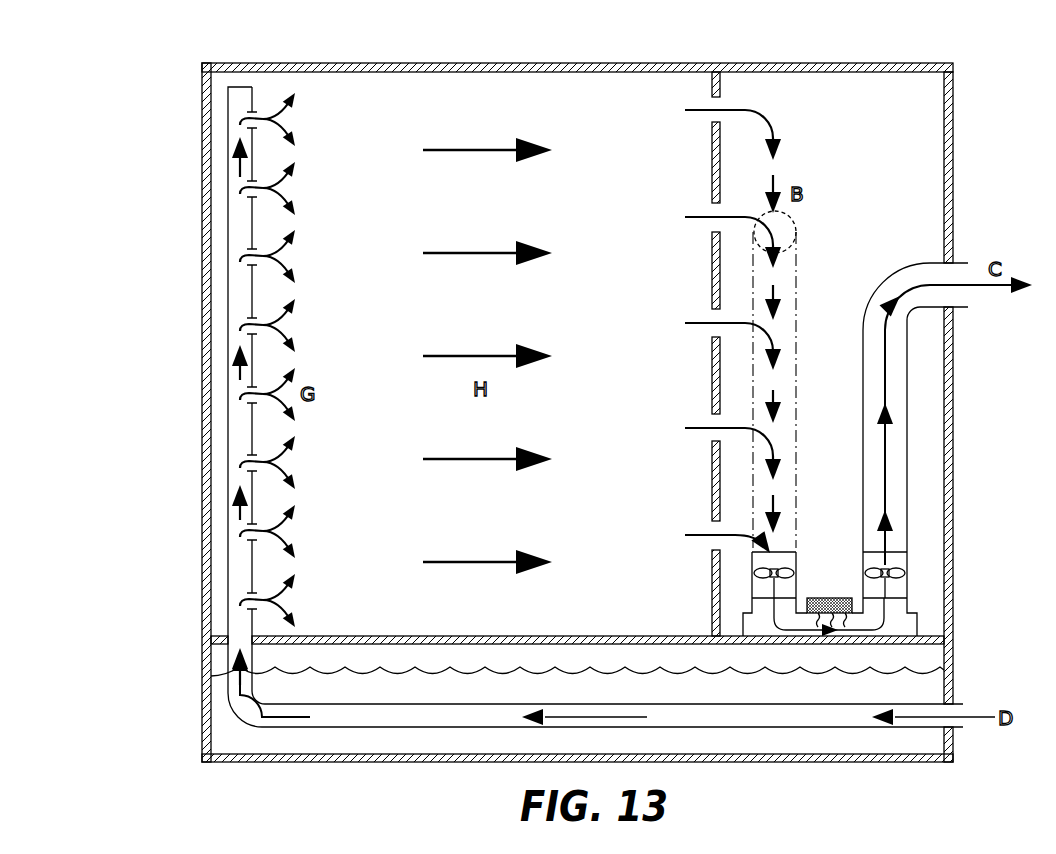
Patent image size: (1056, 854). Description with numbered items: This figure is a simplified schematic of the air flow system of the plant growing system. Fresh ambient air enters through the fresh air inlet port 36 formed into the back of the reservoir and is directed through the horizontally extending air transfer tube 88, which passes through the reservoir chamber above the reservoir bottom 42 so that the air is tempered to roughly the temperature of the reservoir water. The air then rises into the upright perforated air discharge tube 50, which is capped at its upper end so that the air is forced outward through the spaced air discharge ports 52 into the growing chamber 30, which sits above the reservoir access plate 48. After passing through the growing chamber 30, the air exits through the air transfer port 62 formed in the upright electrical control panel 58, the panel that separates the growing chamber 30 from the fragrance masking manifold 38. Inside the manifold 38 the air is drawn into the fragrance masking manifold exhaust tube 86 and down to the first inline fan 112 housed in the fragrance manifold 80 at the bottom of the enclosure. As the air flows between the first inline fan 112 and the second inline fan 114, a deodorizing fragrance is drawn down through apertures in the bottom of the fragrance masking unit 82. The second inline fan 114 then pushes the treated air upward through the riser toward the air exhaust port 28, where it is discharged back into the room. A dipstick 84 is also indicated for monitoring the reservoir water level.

The air exhaust port 28 is at (958, 263).
The growing chamber 30 is at (500, 325).
The fresh air inlet port 36 is at (958, 710).
The fragrance masking manifold 38 is at (902, 178).
The reservoir bottom 42 is at (800, 763).
The reservoir access plate 48 is at (437, 636).
The perforated air discharge tube 50 is at (228, 430).
The air discharge port 52 is at (252, 458).
The electrical control panel 58 is at (712, 150).
The air transfer port 62 is at (757, 215).
The fragrance manifold 80 is at (912, 612).
The fragrance masking unit 82 is at (828, 598).
The dipstick 84 is at (863, 428).
The fragrance masking manifold exhaust tube 86 is at (797, 290).
The air transfer tube 88 is at (423, 727).
The inline fan 112 is at (796, 558).
The inline fan 114 is at (910, 560).